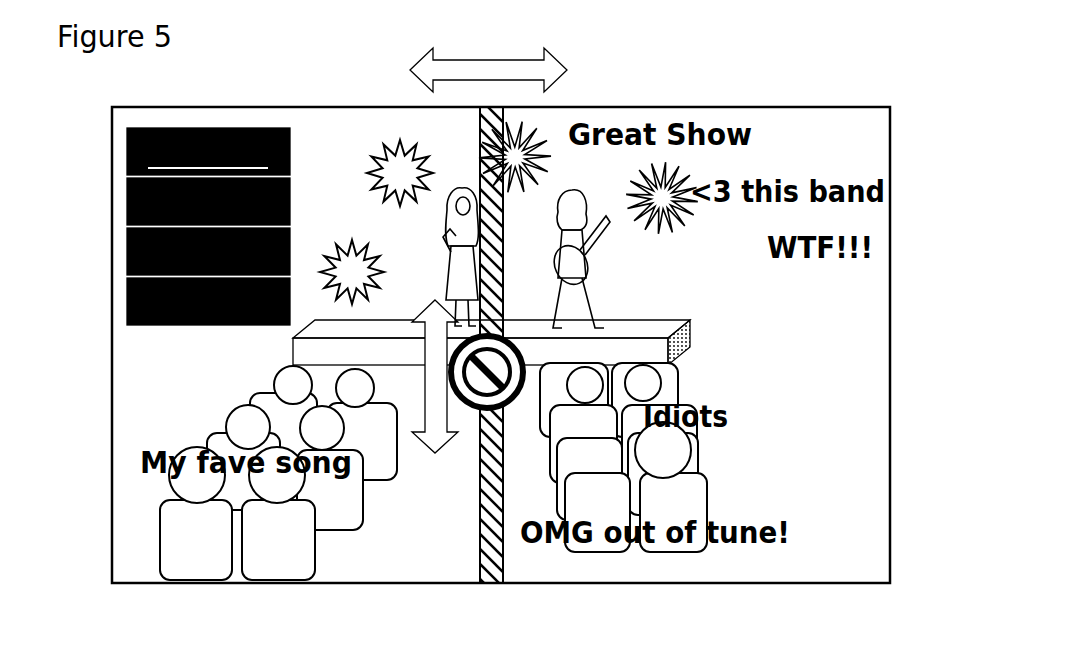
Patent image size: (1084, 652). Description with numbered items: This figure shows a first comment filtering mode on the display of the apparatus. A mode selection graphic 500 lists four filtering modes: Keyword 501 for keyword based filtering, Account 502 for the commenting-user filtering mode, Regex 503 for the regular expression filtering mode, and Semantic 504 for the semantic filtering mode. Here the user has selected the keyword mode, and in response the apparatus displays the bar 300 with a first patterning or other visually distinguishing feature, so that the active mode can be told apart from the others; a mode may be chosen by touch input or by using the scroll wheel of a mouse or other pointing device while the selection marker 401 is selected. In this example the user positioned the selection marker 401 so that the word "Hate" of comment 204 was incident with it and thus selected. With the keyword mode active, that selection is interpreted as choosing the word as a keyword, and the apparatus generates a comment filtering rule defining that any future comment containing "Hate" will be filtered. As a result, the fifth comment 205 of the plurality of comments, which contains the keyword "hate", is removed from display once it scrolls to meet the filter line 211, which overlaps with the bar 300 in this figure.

The mode selection graphic 500 is at (171, 189).
The Keyword mode option 501 is at (127, 160).
The Account mode option 502 is at (127, 212).
The Regex mode option 503 is at (127, 262).
The Semantic mode option 504 is at (127, 312).
The bar 300 is at (478, 157).
The selection marker 401 is at (453, 398).
The filter line 211 is at (504, 566).
The comment 204 is at (770, 308).
The fifth comment 205 is at (878, 367).